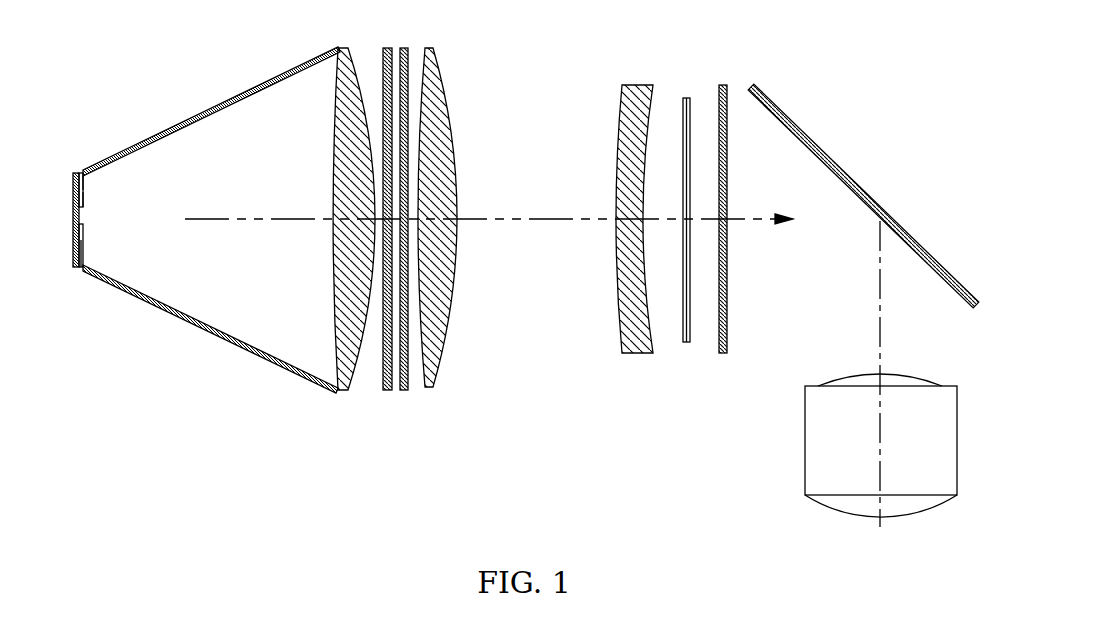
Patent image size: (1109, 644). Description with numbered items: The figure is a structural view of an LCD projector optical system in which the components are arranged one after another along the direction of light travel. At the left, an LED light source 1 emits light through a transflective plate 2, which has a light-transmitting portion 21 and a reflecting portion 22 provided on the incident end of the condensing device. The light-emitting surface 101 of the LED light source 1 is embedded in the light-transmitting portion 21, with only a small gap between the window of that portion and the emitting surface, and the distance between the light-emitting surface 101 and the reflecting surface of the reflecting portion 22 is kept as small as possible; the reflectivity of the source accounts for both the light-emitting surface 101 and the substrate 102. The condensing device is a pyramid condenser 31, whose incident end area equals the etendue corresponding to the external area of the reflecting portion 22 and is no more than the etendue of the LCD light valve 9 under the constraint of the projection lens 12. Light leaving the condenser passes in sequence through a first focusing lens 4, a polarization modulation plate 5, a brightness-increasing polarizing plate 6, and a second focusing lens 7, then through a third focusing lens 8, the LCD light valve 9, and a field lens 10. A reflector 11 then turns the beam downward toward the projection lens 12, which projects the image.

The LED light source 1 is at (75, 172).
The transflective plate 2 is at (154, 165).
The light-transmitting portion 21 is at (84, 207).
The reflecting portion 22 is at (84, 190).
The light-emitting surface 101 is at (84, 226).
The substrate 102 is at (84, 242).
The pyramid condenser 31 is at (165, 306).
The first focusing lens 4 is at (350, 370).
The polarization modulation plate 5 is at (387, 393).
The brightness-increasing polarizing plate 6 is at (403, 393).
The second focusing lens 7 is at (430, 390).
The third focusing lens 8 is at (630, 355).
The LCD light valve 9 is at (682, 345).
The field lens 10 is at (727, 328).
The reflector 11 is at (960, 290).
The projection lens 12 is at (832, 501).